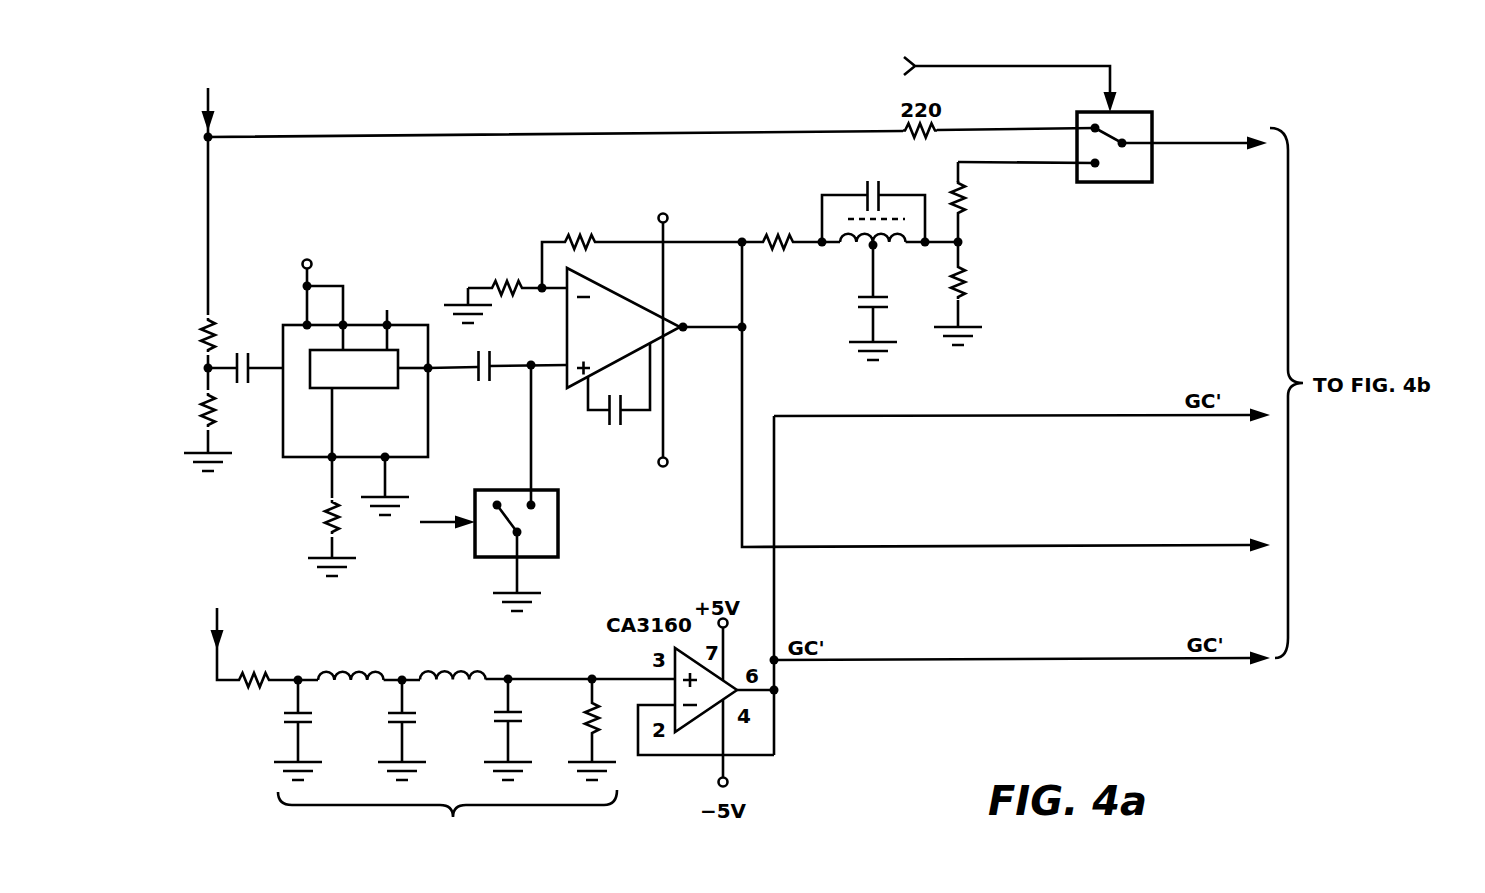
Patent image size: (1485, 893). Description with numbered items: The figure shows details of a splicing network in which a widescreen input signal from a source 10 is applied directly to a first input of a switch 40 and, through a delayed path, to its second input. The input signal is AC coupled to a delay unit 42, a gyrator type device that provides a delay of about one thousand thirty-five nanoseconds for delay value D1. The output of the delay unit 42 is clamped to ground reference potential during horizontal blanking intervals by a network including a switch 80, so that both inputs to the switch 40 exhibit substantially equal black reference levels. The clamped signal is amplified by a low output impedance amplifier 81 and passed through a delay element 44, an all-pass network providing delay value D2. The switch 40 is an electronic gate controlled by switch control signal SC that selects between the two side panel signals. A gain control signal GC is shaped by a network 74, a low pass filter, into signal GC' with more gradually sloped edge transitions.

The source 10 is at (217, 87).
The delay unit 42 is at (318, 192).
The low output impedance amplifier 81 is at (644, 542).
The switch 80 is at (573, 542).
The delay element 44 is at (758, 184).
The switch 40 is at (1120, 244).
The network 74 is at (494, 850).